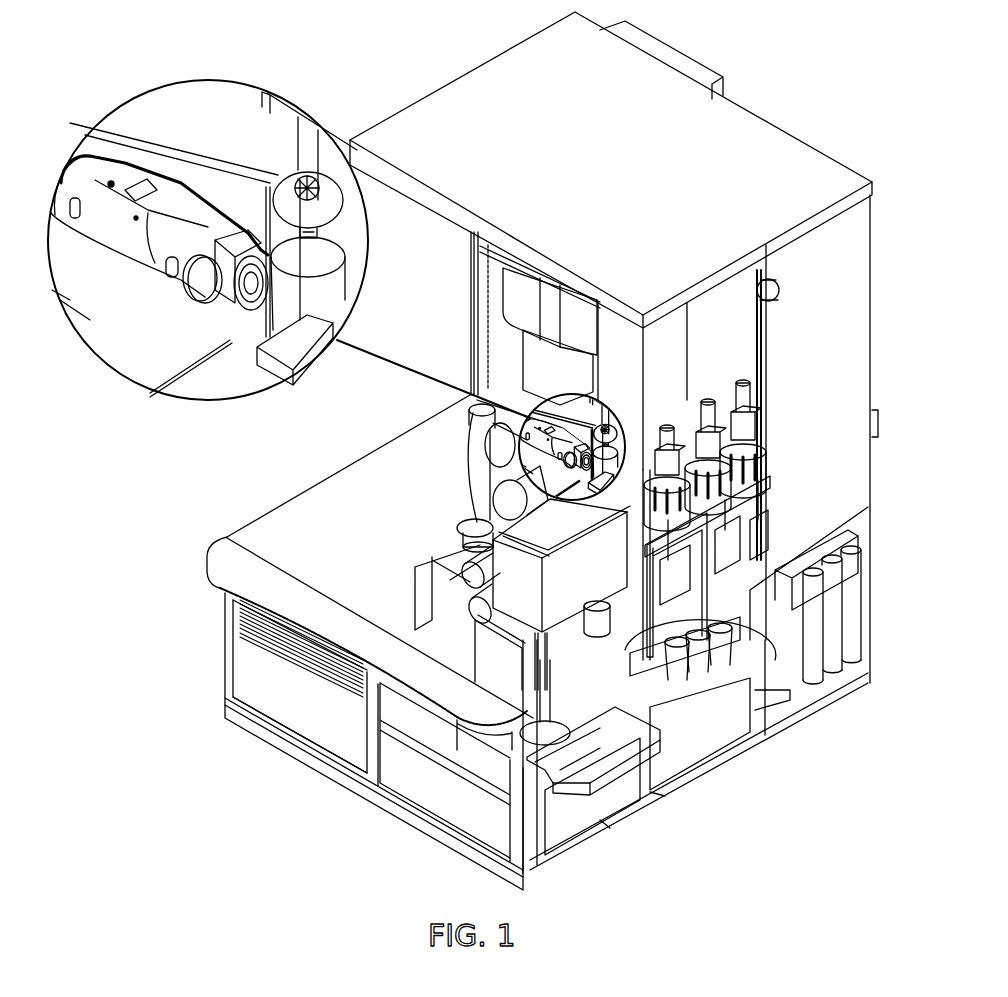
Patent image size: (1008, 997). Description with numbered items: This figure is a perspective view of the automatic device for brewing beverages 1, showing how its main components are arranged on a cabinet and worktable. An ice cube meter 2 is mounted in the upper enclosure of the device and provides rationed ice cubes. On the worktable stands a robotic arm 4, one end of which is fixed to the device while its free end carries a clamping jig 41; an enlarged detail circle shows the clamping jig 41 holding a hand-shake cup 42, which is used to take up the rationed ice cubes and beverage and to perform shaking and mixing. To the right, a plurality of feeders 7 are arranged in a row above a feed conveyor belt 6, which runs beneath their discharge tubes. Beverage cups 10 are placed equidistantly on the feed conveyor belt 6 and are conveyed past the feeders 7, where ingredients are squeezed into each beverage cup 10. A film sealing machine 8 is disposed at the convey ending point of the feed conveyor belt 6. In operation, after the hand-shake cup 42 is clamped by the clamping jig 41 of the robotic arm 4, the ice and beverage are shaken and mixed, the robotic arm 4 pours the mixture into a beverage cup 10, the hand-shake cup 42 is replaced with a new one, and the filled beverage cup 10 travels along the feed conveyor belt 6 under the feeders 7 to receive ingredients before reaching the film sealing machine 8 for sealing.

The automatic device for brewing beverages 1 is at (378, 45).
The ice cube meter 2 is at (530, 293).
The robotic arm 4 is at (470, 437).
The clamping jig 41 is at (240, 225).
The hand-shake cup 42 is at (327, 252).
The feed conveyor belt 6 is at (760, 615).
The feeders 7 is at (763, 455).
The film sealing machine 8 is at (507, 580).
The beverage cup 10 is at (620, 590).